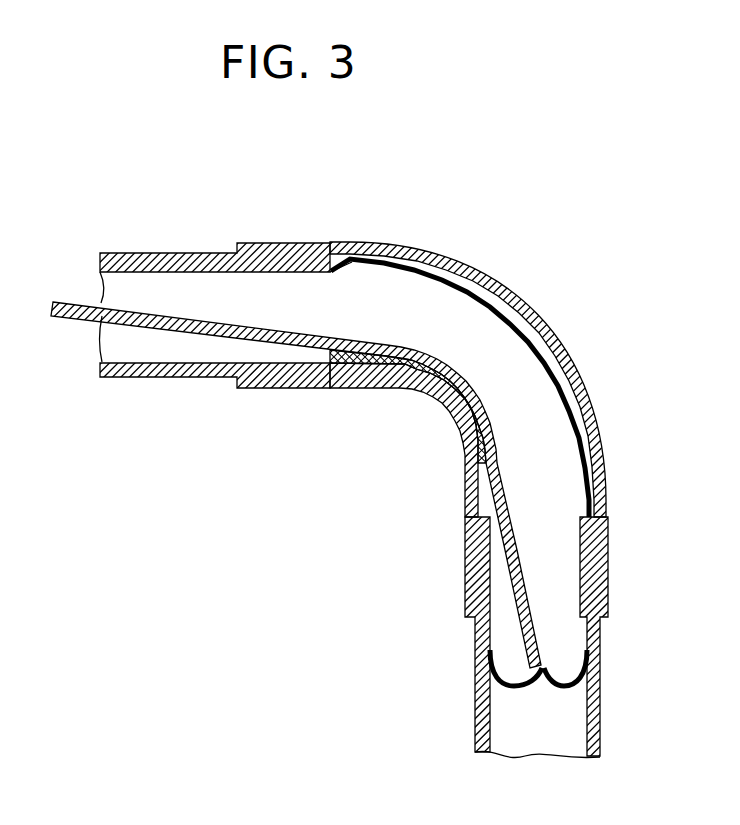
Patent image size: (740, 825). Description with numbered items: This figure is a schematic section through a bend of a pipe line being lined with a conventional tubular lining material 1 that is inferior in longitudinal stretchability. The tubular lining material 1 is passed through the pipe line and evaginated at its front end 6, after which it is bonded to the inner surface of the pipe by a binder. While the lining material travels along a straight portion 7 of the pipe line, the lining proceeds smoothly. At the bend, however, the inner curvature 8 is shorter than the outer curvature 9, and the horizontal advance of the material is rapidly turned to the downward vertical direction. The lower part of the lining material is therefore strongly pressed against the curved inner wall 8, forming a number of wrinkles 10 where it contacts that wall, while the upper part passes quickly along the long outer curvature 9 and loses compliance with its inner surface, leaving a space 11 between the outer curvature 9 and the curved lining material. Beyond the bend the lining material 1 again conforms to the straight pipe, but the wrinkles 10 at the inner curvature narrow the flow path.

The tubular lining material 1 is at (92, 318).
The front end 6 is at (553, 688).
The straight portion 7 is at (173, 378).
The inner curvature 8 is at (437, 400).
The outer curvature 9 is at (513, 292).
The wrinkles 10 is at (450, 420).
The space 11 is at (520, 330).